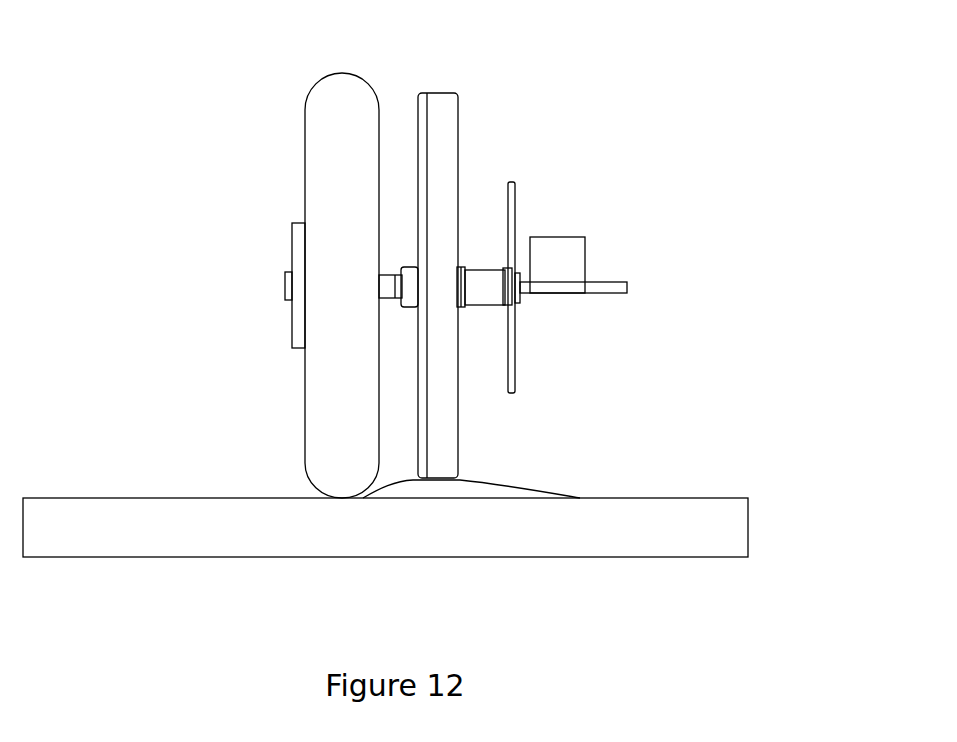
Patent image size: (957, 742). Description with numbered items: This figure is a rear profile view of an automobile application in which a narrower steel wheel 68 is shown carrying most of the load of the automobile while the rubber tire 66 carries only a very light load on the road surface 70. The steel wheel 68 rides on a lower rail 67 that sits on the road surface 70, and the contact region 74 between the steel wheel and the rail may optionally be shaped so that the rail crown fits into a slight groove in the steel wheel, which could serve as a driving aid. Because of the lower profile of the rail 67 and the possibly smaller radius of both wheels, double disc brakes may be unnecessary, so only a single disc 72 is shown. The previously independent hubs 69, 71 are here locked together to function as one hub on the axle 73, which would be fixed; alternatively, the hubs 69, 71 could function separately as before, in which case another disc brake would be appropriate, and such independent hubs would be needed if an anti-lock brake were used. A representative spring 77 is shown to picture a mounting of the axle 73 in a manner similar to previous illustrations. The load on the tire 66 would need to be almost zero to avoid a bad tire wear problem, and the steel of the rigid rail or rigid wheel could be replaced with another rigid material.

The tire 66 is at (316, 85).
The lower rail 67 is at (482, 485).
The narrower steel wheel 68 is at (442, 93).
The hub 69 is at (487, 267).
The road surface 70 is at (690, 498).
The hub 71 is at (386, 270).
The disc 72 is at (513, 182).
The axle 73 is at (612, 294).
The contact region 74 is at (437, 480).
The spring 77 is at (572, 236).